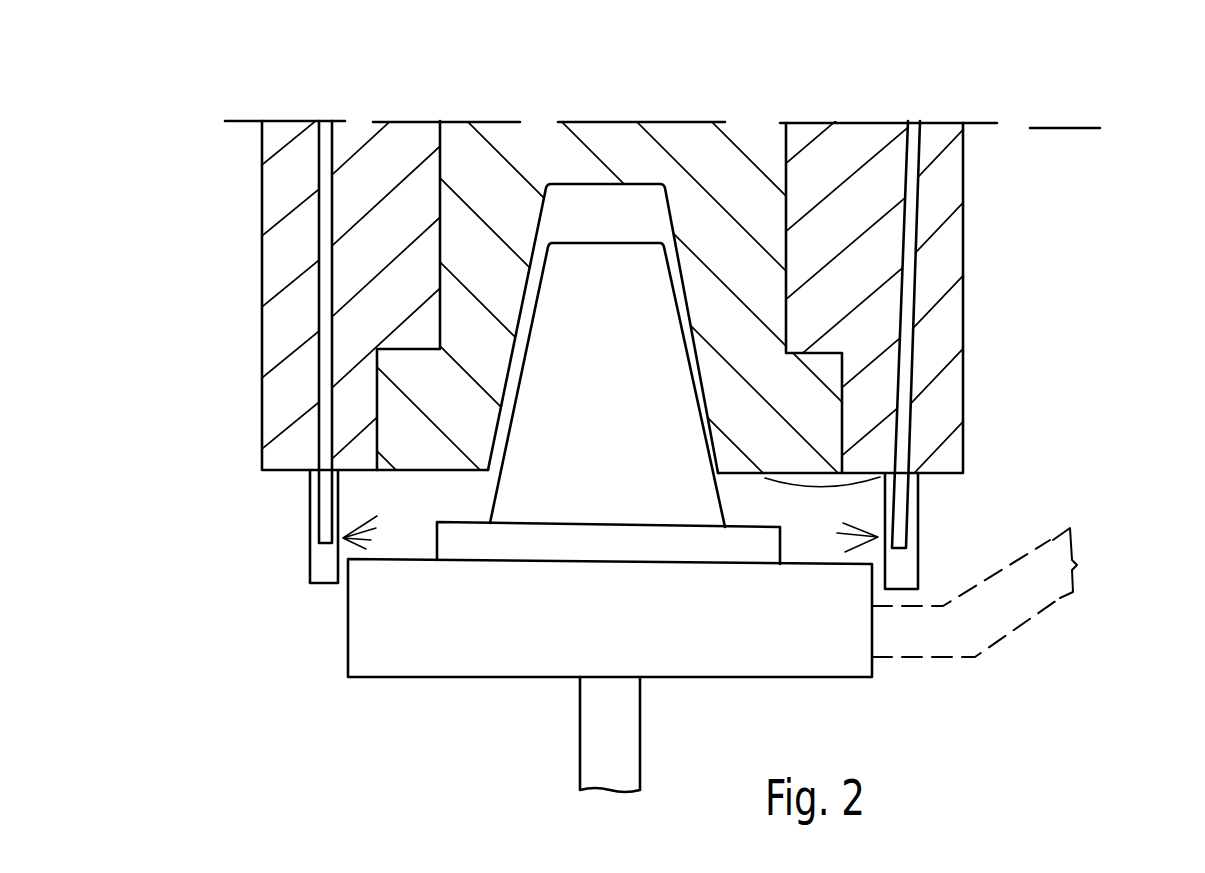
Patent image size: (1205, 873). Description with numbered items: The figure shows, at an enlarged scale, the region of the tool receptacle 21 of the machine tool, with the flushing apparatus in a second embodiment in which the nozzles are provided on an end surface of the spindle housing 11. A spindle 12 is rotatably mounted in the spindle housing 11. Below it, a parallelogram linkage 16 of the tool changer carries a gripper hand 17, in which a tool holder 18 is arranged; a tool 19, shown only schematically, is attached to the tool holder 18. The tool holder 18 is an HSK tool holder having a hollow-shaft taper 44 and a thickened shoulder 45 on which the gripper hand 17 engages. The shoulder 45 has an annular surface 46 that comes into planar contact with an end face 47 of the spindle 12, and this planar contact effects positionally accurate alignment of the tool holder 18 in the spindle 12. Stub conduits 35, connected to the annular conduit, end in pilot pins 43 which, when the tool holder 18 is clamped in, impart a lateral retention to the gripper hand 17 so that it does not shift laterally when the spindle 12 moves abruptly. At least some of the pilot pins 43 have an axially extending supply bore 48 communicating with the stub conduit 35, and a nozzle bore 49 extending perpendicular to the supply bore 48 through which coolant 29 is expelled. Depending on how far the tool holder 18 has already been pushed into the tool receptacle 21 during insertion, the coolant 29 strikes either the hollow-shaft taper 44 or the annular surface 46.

The spindle housing 11 is at (838, 158).
The spindle 12 is at (522, 143).
The parallelogram linkage 16 is at (1073, 565).
The gripper hand 17 is at (777, 648).
The tool holder 18 is at (548, 542).
The tool 19 is at (597, 753).
The tool receptacle 21 is at (625, 207).
The coolant 29 is at (385, 537).
The stub conduit 35 is at (320, 155).
The pilot pin 43 is at (308, 577).
The hollow-shaft taper 44 is at (640, 310).
The thickened shoulder 45 is at (465, 548).
The annular surface 46 is at (736, 526).
The end face 47 is at (880, 477).
The supply bore 48 is at (312, 480).
The nozzle bore 49 is at (338, 522).